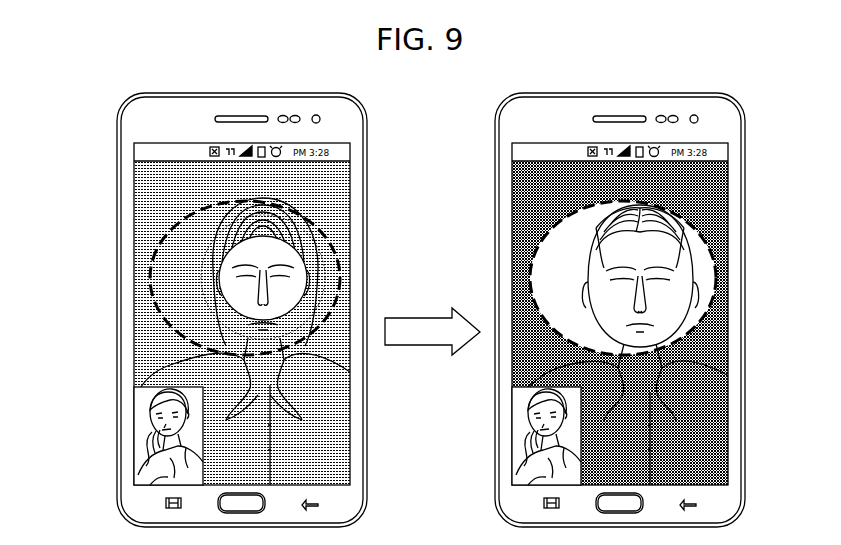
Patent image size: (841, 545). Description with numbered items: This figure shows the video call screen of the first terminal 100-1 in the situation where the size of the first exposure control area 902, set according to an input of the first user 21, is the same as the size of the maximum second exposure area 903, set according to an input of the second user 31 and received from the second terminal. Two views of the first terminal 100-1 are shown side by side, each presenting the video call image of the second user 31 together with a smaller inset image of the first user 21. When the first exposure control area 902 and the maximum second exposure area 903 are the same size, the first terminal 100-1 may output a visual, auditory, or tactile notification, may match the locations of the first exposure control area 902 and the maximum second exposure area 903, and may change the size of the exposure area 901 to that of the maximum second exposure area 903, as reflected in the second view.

The first terminal 100-1 is at (298, 93).
The second user 31 is at (300, 203).
The first user 21 is at (147, 438).
The exposure area 901 is at (153, 272).
The first exposure control area 902 is at (188, 253).
The maximum second exposure area 903 is at (208, 238).